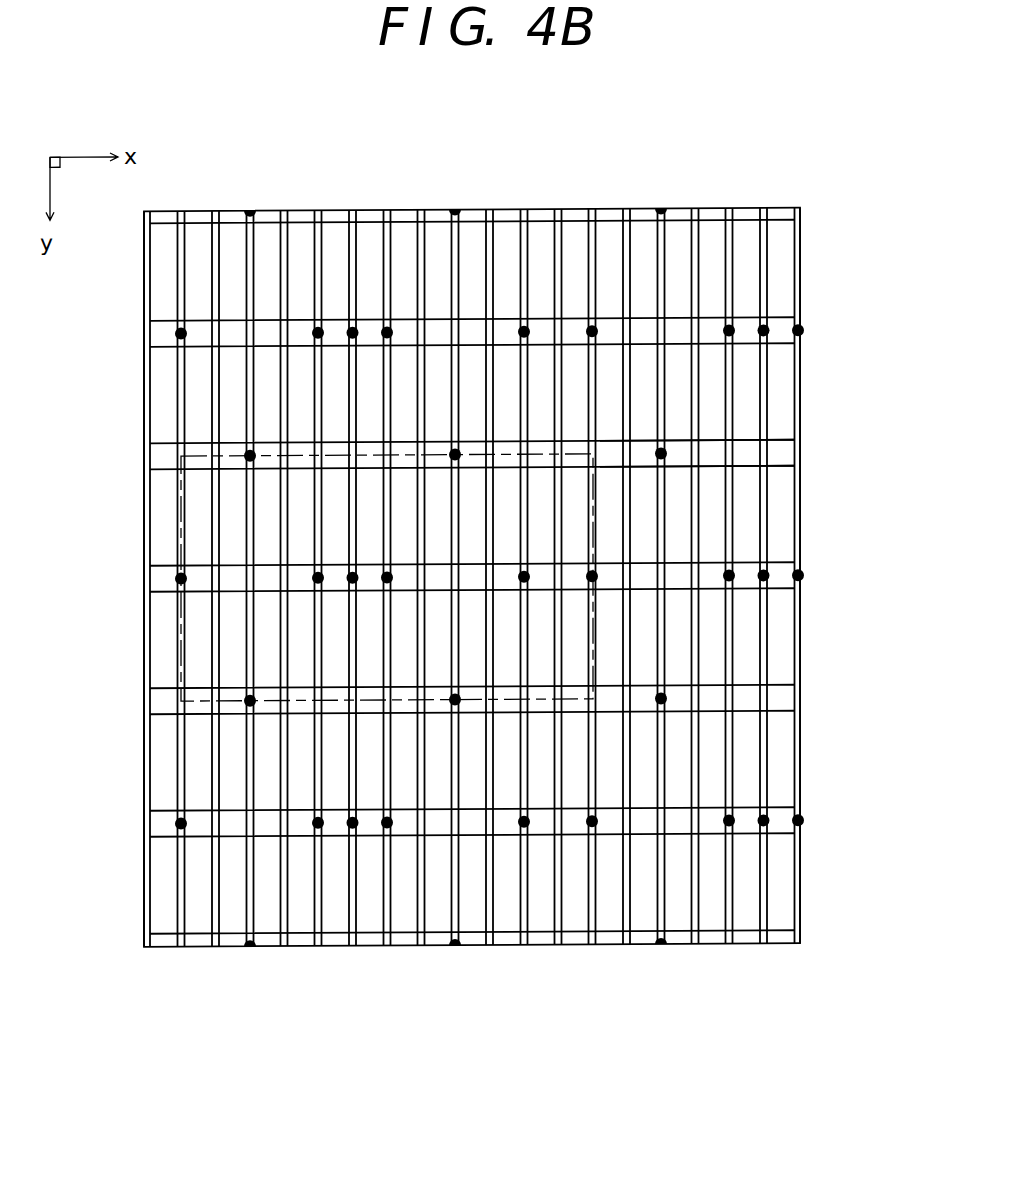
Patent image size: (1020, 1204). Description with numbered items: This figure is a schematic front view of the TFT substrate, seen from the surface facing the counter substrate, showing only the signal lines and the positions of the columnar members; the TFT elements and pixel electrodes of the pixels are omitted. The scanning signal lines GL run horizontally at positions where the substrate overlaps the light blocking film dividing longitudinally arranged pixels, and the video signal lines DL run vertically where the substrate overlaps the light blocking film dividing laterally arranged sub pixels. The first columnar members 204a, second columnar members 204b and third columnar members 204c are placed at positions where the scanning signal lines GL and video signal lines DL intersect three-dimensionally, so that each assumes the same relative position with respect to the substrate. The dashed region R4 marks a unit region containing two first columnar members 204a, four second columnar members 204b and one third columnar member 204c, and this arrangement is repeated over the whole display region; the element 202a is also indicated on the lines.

The first columnar member 204a is at (665, 716).
The second columnar member 204b is at (596, 839).
The third columnar member 204c is at (356, 560).
The region R4 is at (184, 449).
The video signal line DL is at (182, 277).
The scanning signal line GL is at (232, 585).
The line portion 202a is at (770, 457).